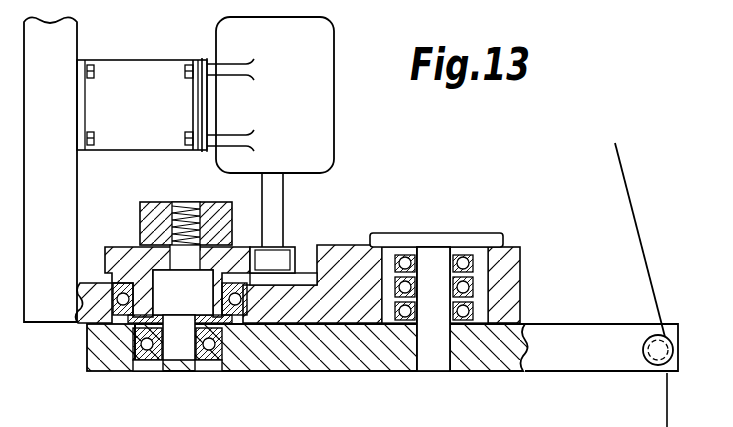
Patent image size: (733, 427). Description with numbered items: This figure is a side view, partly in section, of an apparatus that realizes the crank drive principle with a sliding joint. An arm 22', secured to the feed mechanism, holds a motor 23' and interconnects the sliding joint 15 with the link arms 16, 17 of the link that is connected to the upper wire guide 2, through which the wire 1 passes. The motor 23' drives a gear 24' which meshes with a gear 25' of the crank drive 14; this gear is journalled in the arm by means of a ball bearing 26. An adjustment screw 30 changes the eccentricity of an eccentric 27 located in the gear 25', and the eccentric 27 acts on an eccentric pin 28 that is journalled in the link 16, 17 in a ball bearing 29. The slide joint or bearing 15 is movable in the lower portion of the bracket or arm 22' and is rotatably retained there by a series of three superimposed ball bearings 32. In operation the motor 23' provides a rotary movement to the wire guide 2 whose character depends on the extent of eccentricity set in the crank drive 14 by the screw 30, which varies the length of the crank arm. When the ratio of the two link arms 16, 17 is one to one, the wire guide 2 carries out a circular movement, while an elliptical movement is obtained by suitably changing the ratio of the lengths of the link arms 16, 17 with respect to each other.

The wire 1 is at (635, 234).
The upper wire guide 2 is at (652, 338).
The crank drive 14 is at (140, 375).
The sliding joint 15 is at (444, 407).
The link arm 16 is at (278, 352).
The link arm 17 is at (645, 376).
The arm 22' is at (84, 169).
The motor 23' is at (309, 132).
The gear 24' is at (295, 243).
The gear 25' is at (169, 258).
The ball bearing 26 is at (88, 323).
The eccentric 27 is at (187, 302).
The eccentric pin 28 is at (185, 372).
The ball bearing 29 is at (128, 362).
The adjustment screw 30 is at (157, 202).
The ball bearings 32 is at (475, 312).